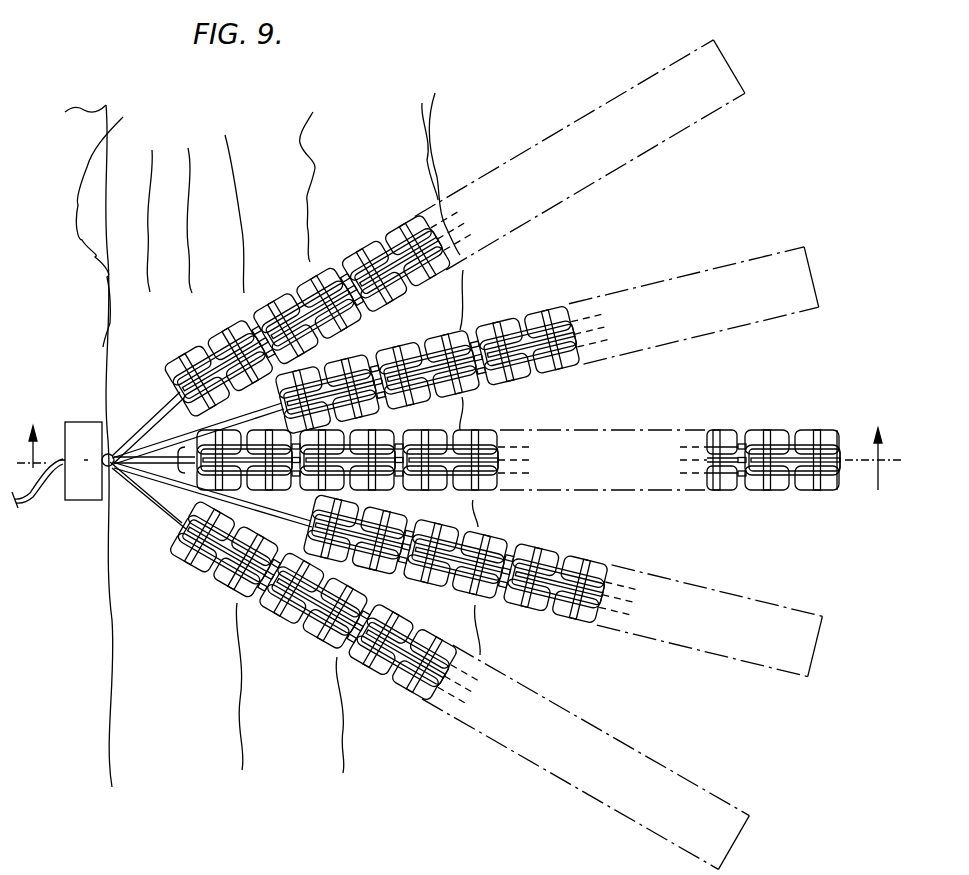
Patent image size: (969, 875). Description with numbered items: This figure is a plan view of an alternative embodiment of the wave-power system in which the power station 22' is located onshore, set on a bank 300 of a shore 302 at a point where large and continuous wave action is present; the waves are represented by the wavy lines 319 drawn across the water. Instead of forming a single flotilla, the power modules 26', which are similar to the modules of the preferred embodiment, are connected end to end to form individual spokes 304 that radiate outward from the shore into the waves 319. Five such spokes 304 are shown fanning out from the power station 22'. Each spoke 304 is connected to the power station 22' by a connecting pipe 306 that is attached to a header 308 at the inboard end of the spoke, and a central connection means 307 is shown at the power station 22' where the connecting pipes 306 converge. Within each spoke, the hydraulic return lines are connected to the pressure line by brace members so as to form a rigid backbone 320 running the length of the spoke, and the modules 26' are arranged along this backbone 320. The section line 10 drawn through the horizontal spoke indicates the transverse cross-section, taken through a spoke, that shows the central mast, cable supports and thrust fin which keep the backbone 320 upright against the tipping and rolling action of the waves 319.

The bank 300 is at (110, 668).
The shore 302 is at (95, 186).
The waves 319 is at (315, 168).
The power station 22' is at (57, 438).
The central connection means 307 is at (102, 466).
The section line 10- 10 is at (459, 445).
The connecting pipe 306 is at (128, 412).
The header 308 is at (163, 357).
The spokes 304 is at (480, 166).
The modules 26' is at (465, 355).
The rigid backbone 320 is at (157, 473).